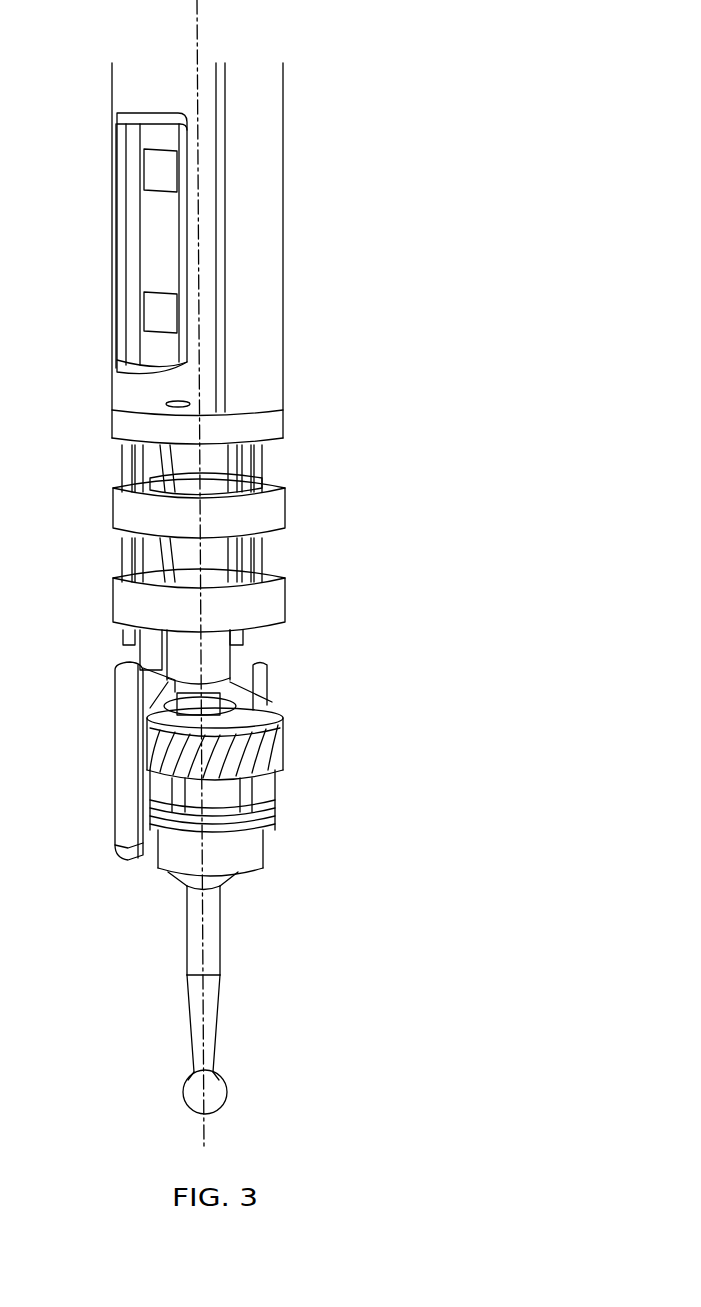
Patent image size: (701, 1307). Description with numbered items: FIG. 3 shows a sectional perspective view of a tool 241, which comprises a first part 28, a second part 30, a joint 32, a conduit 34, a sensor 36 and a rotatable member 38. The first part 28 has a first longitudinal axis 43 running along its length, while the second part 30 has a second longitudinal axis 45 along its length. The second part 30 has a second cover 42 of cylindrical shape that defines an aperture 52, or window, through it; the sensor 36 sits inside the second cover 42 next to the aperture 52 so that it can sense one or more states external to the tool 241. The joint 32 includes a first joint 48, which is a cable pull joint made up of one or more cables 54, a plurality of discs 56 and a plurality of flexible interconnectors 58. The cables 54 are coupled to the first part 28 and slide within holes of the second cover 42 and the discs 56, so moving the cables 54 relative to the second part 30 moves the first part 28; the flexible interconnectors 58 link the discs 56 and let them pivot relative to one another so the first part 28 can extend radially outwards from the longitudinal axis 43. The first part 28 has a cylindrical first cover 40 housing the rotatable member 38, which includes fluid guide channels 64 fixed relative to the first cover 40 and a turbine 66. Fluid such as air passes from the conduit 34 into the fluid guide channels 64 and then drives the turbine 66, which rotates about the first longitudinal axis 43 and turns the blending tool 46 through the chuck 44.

The first part 28 is at (443, 730).
The second part 30 is at (365, 117).
The joint 32 is at (460, 518).
The conduit 34 is at (215, 657).
The sensor 36 is at (150, 232).
The rotatable member 38 is at (303, 772).
The first cover 40 is at (125, 742).
The second cover 42 is at (283, 325).
The first longitudinal axis 43 is at (203, 1125).
The chuck 44 is at (252, 852).
The second longitudinal axis 45 is at (199, 30).
The blending tool 46 is at (250, 1033).
The first joint 48 is at (72, 545).
The aperture 52 is at (116, 308).
The cables 54 is at (122, 478).
The discs 56 is at (290, 590).
The flexible interconnectors 58 is at (275, 492).
The fluid guide channels 64 is at (283, 722).
The turbine 66 is at (272, 818).
The tool 241 is at (482, 203).